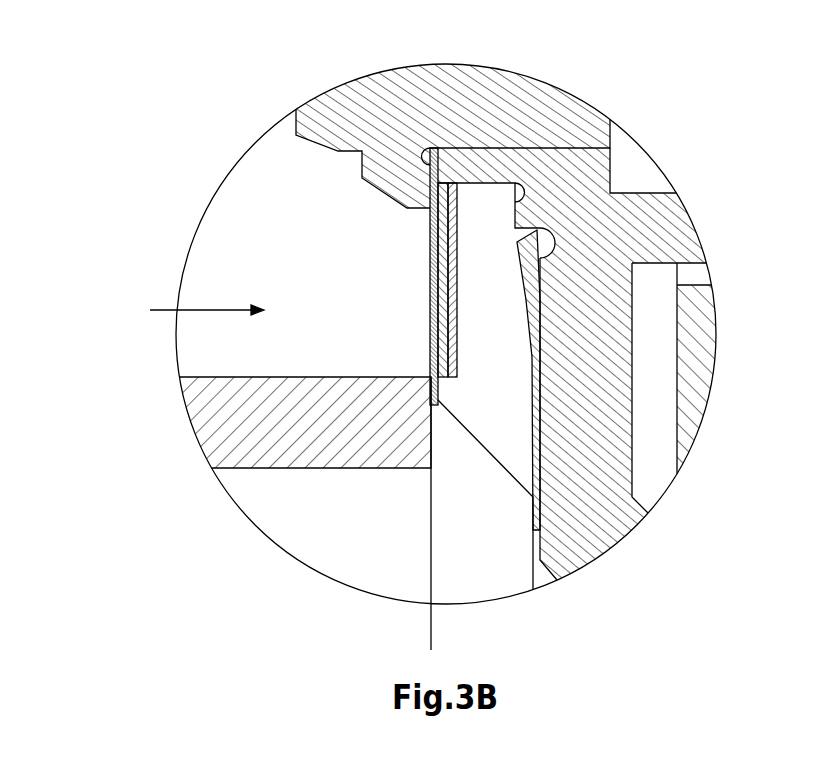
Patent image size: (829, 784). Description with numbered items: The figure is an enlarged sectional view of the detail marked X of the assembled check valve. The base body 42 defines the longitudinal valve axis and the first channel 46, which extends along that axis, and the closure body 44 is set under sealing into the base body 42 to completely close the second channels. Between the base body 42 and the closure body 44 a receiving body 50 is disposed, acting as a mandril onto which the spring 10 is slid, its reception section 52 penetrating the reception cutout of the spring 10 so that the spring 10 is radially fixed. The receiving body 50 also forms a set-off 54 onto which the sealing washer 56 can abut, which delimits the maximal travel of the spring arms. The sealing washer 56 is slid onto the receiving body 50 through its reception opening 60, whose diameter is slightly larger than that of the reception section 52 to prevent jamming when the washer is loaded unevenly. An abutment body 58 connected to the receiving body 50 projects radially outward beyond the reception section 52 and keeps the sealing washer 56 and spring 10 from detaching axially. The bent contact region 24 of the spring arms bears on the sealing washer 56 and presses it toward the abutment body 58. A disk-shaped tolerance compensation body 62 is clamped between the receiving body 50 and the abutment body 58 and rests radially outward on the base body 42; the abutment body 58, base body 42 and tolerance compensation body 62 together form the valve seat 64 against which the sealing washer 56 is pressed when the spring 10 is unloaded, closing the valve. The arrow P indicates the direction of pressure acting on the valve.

The spring 10 is at (522, 280).
The contact region 24 is at (452, 323).
The base body 42 is at (207, 440).
The closure body 44 is at (702, 350).
The first channel 46 is at (299, 360).
The receiving body 50 is at (682, 217).
The reception section 52 is at (467, 165).
The set-off 54 is at (516, 213).
The sealing washer 56 is at (440, 297).
The abutment body 58 is at (317, 110).
The reception opening 60 is at (430, 148).
The tolerance compensation body 62 is at (430, 226).
The valve seat 64 is at (318, 234).
The pressure P is at (172, 312).
The region X is at (106, 107).